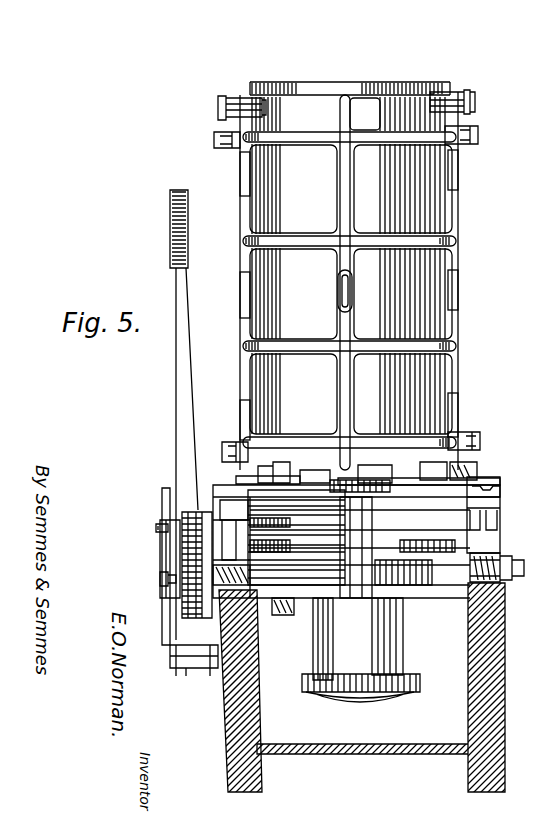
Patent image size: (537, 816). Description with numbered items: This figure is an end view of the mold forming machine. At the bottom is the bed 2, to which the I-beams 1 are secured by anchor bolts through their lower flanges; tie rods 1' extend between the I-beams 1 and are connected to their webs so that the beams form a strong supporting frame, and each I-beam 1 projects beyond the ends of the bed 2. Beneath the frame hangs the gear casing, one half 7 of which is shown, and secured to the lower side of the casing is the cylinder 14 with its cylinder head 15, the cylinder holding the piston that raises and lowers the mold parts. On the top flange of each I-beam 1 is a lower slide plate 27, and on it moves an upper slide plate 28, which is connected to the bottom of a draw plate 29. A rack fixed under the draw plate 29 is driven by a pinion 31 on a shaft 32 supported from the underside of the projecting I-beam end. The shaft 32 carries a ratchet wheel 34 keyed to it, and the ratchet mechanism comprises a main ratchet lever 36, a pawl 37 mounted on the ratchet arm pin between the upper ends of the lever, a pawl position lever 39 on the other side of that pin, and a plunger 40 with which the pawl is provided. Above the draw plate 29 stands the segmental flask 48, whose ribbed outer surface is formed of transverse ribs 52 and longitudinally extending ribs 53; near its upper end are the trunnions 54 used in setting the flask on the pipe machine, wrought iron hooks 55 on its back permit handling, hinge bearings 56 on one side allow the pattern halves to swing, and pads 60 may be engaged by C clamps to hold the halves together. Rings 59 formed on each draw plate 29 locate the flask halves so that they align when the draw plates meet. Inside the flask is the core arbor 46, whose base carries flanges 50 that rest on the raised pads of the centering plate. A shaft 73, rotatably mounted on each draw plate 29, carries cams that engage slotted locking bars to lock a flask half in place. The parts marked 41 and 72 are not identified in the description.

The I-beam 1 is at (497, 554).
The tie rods 1' is at (413, 600).
The bed 2 is at (505, 676).
The gear casing half 7 is at (305, 604).
The cylinder 14 is at (388, 676).
The cylinder head 15 is at (370, 698).
The lower slide plate 27 is at (500, 512).
The upper slide plate 28 is at (500, 496).
The draw plate 29 is at (486, 486).
The pinion 31 is at (345, 645).
The shaft 32 is at (284, 600).
The ratchet wheel 34 is at (186, 604).
The main ratchet lever 36 is at (180, 636).
The pawl 37 is at (156, 528).
The pawl position lever 39 is at (162, 498).
The plunger 40 is at (166, 545).
The pin 41 is at (190, 672).
The core arbor 46 is at (176, 264).
The segmental flask 48 is at (272, 318).
The flanges 50 is at (352, 494).
The transverse ribs 52 is at (458, 240).
The longitudinally extending ribs 53 is at (345, 232).
The trunnions 54 is at (220, 106).
The wrought iron hooks 55 is at (353, 300).
The hinge bearings 56 is at (479, 135).
The rings 59 is at (238, 480).
The pads 60 is at (458, 178).
The block 72 is at (372, 470).
The shaft 73 is at (318, 472).